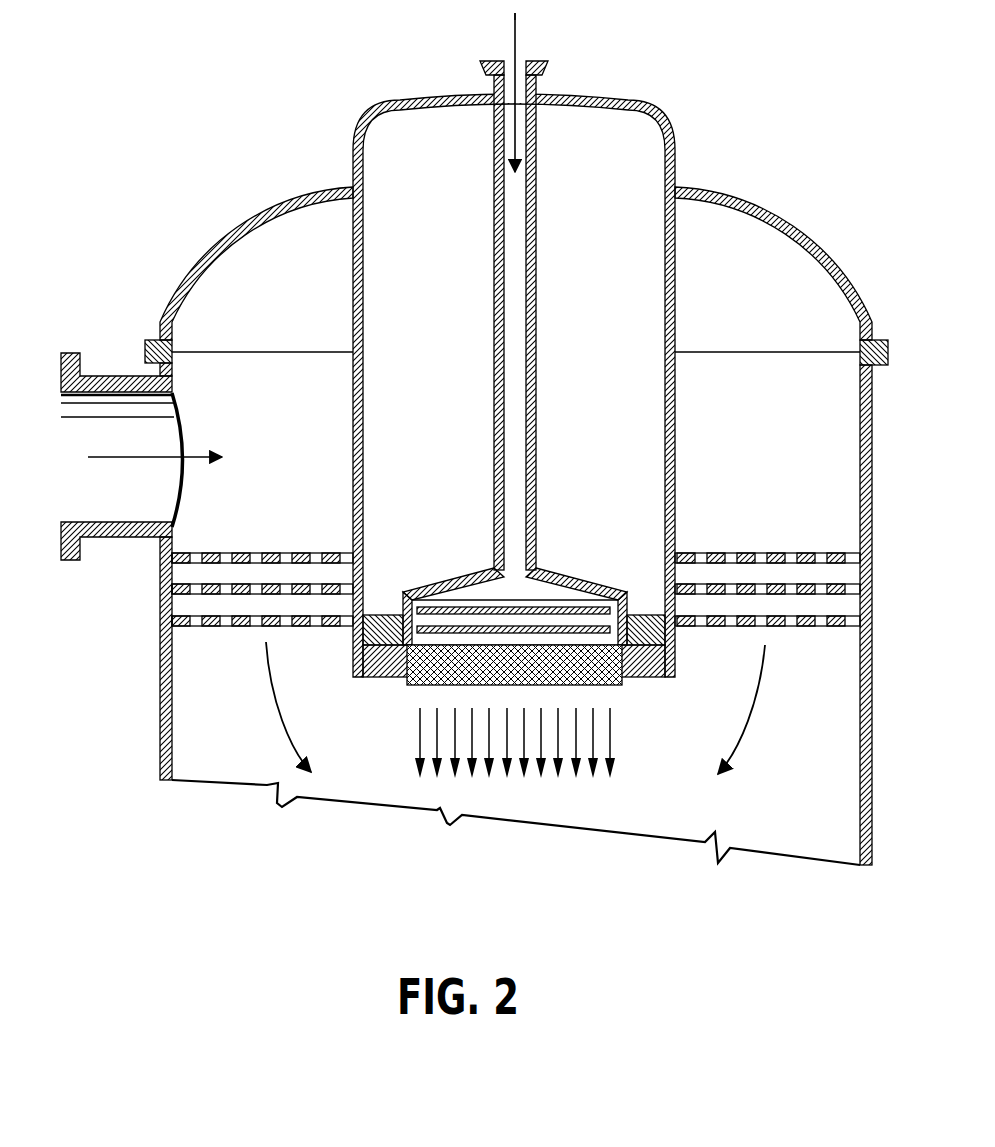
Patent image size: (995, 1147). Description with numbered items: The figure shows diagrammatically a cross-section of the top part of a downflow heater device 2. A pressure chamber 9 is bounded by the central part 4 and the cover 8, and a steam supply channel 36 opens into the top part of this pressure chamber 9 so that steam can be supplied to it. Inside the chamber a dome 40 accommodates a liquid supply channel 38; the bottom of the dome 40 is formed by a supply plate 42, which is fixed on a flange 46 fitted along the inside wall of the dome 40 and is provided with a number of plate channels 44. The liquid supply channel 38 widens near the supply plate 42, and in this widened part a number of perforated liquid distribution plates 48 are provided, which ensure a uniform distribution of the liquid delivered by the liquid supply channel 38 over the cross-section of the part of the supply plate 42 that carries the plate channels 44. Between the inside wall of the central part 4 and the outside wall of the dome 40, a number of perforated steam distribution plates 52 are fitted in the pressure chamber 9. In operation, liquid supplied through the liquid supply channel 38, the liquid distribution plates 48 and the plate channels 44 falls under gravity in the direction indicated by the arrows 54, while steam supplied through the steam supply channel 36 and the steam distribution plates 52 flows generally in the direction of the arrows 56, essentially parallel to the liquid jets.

The downflow heater device 2 is at (188, 212).
The central part 4 is at (160, 718).
The cover 8 is at (730, 197).
The pressure chamber 9 is at (223, 741).
The steam supply channel 36 is at (137, 537).
The liquid supply channel 38 is at (535, 228).
The dome 40 is at (353, 227).
The supply plate 42 is at (385, 672).
The plate channels 44 is at (610, 680).
The flange 46 is at (608, 628).
The liquid distribution plates 48 is at (620, 598).
The steam distribution plates 52 is at (835, 550).
The arrows 54 is at (538, 777).
The arrows 56 is at (283, 735).